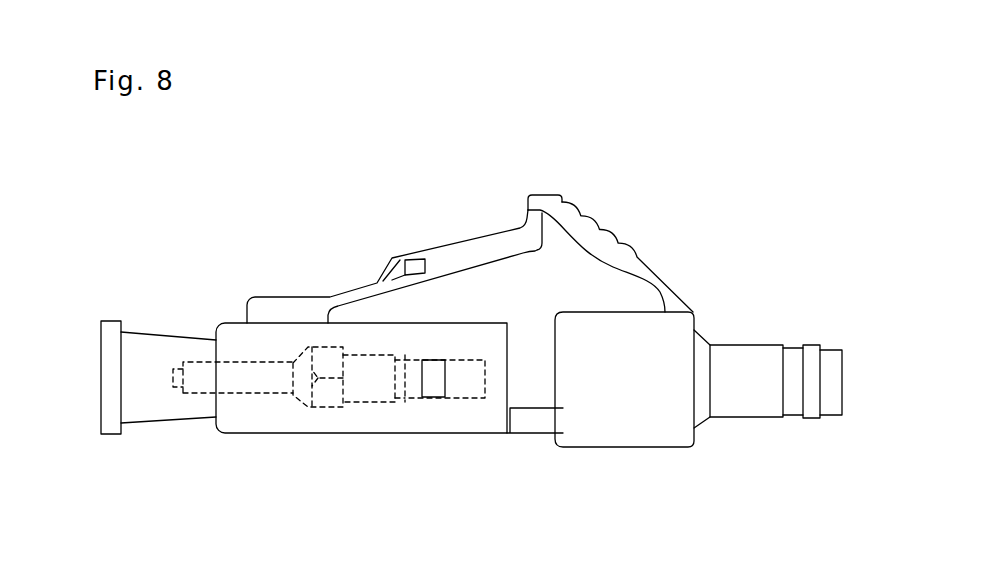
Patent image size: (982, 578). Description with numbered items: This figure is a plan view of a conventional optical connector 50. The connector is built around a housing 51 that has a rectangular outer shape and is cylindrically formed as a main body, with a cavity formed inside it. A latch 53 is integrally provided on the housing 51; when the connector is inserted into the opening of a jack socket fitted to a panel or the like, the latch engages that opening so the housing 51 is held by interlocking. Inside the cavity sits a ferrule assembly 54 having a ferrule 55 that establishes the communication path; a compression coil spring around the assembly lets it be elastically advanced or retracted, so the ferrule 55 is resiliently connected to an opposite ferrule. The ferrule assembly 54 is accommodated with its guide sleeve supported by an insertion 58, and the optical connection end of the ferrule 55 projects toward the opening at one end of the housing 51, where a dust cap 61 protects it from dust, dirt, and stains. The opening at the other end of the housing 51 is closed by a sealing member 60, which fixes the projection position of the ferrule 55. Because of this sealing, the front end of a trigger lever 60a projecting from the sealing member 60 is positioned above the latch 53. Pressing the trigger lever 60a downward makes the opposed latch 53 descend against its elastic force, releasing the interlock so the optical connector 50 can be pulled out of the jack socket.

The optical connector 50 is at (496, 176).
The housing 51 is at (438, 417).
The latch 53 is at (468, 250).
The ferrule assembly 54 is at (316, 416).
The ferrule 55 is at (195, 383).
The insertion 58 is at (737, 360).
The sealing member 60 is at (643, 435).
The trigger lever 60a is at (578, 198).
The dust cap 61 is at (172, 333).